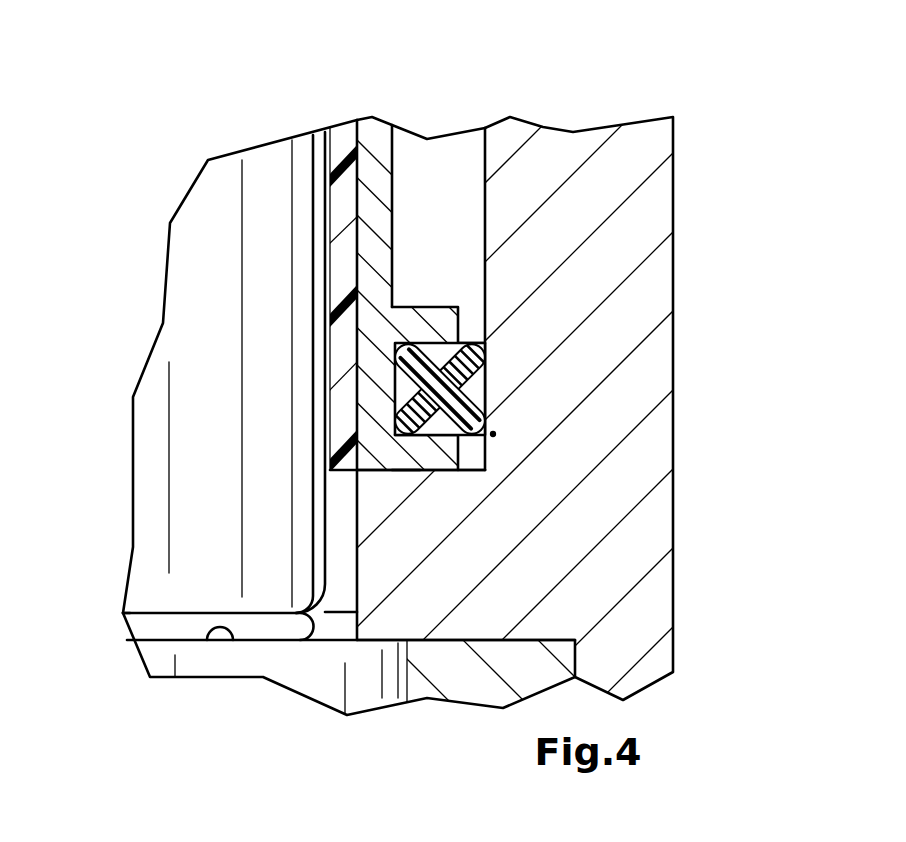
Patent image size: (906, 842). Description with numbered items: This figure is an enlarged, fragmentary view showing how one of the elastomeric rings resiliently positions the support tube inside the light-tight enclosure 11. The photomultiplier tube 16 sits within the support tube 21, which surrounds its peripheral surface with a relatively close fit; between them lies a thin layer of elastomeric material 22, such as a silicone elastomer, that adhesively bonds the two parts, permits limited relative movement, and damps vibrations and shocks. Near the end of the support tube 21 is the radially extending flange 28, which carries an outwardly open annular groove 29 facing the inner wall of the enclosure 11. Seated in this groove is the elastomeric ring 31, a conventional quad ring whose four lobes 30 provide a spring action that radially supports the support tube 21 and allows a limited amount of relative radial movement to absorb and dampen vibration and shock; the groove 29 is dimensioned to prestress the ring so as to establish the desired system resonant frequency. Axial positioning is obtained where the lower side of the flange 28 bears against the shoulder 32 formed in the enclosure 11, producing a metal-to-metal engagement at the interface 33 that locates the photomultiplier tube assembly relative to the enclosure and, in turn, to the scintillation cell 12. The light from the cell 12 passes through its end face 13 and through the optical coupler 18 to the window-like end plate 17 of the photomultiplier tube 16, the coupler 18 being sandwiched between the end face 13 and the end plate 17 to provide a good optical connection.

The light-tight enclosure 11 is at (605, 192).
The scintillation cell 12 is at (315, 678).
The end face 13 is at (207, 640).
The photomultiplier tube 16 is at (173, 403).
The end plate 17 is at (125, 620).
The optical coupler 18 is at (197, 623).
The support tube 21 is at (380, 142).
The elastomeric material 22 is at (347, 200).
The flange 28 is at (383, 450).
The annular groove 29 is at (430, 342).
The lobes 30 is at (402, 420).
The elastomeric ring 31 is at (493, 434).
The shoulder 32 is at (427, 512).
The interface 33 is at (406, 472).